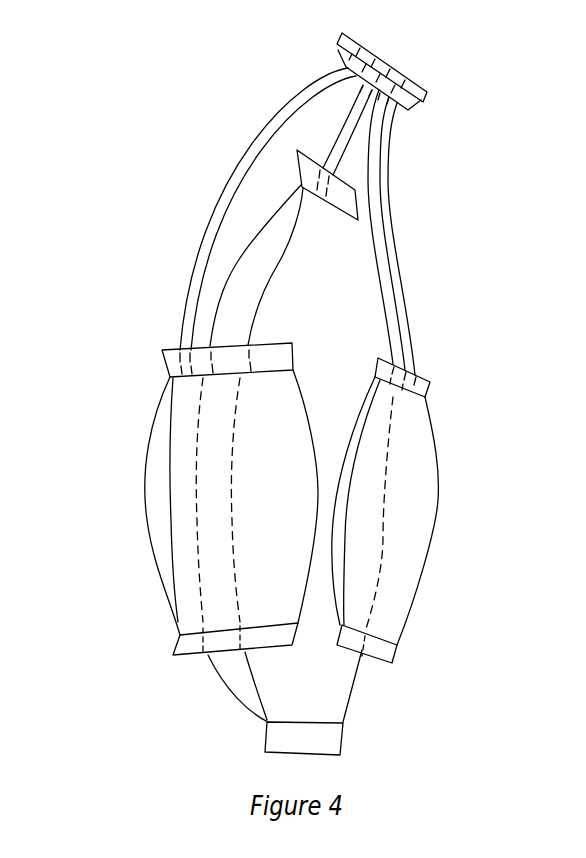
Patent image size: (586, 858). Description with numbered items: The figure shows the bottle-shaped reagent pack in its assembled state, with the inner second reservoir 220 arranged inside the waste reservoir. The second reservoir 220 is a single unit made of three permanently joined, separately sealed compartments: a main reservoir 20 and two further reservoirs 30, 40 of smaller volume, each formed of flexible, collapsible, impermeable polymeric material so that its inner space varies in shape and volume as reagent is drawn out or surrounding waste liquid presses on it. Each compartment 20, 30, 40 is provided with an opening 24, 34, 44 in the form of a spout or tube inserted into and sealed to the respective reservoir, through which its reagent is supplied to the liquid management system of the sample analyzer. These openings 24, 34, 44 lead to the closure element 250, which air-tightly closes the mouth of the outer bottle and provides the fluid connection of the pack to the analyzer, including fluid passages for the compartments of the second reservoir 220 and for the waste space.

The second reservoir 220 is at (102, 83).
The closure element 250 is at (430, 95).
The second opening 24 is at (218, 207).
The second opening 34 is at (325, 136).
The second reservoir 30 is at (353, 250).
The second opening 44 is at (408, 338).
The second reservoir 20 is at (162, 412).
The second reservoir 40 is at (421, 505).